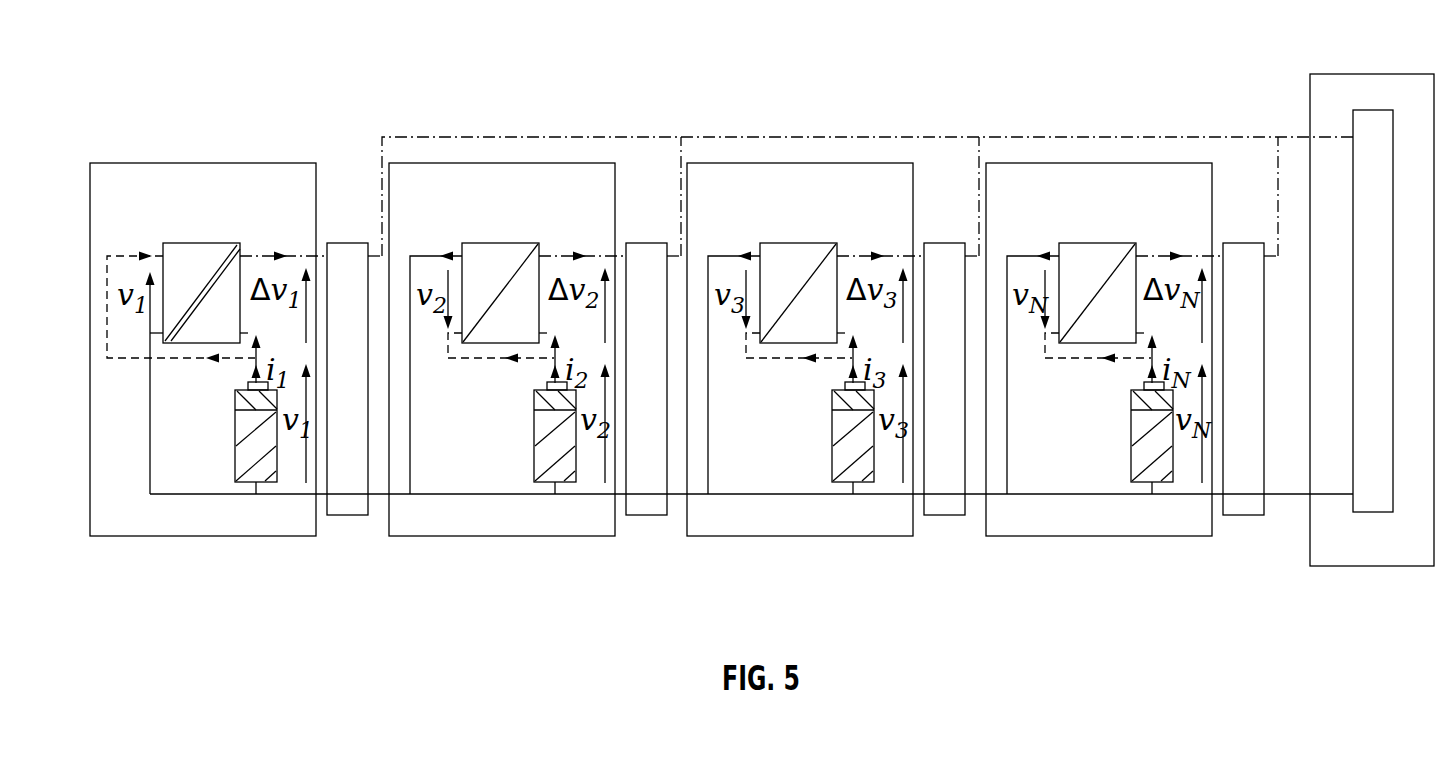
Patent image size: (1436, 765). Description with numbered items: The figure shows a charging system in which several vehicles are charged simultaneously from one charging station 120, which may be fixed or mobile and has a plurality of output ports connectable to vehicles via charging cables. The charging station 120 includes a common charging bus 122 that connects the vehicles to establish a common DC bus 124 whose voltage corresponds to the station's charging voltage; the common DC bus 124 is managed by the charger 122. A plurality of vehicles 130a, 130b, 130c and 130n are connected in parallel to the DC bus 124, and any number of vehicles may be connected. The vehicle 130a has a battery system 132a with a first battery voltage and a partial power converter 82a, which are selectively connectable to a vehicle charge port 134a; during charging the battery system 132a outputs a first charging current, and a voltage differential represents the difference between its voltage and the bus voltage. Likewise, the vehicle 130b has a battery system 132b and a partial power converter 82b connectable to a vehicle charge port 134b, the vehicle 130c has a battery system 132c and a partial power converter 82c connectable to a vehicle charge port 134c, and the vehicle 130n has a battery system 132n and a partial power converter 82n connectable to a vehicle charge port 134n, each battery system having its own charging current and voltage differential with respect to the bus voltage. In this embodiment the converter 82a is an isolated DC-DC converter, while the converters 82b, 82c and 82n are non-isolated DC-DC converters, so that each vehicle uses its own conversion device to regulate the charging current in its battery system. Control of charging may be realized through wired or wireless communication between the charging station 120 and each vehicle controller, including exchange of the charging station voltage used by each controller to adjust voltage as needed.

The charging station 120 is at (1375, 74).
The common charging bus 122 is at (1372, 512).
The common DC bus 124 is at (863, 135).
The vehicle 130a is at (121, 182).
The vehicle 130b is at (407, 183).
The vehicle 130c is at (707, 183).
The vehicle 130n is at (1003, 183).
The partial power converter 82a is at (178, 343).
The partial power converter 82b is at (477, 343).
The partial power converter 82c is at (775, 343).
The partial power converter 82n is at (1074, 343).
The battery system 132a is at (246, 456).
The battery system 132b is at (545, 456).
The battery system 132c is at (843, 456).
The battery system 132n is at (1131, 456).
The vehicle charge port 134a is at (347, 515).
The vehicle charge port 134b is at (646, 515).
The vehicle charge port 134c is at (944, 515).
The vehicle charge port 134n is at (1244, 515).